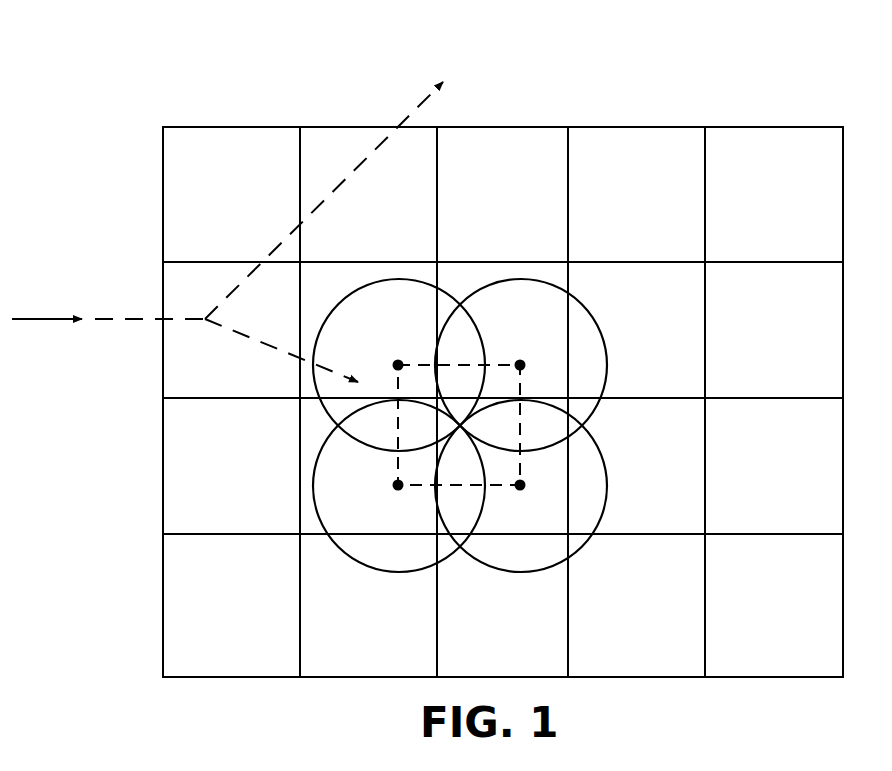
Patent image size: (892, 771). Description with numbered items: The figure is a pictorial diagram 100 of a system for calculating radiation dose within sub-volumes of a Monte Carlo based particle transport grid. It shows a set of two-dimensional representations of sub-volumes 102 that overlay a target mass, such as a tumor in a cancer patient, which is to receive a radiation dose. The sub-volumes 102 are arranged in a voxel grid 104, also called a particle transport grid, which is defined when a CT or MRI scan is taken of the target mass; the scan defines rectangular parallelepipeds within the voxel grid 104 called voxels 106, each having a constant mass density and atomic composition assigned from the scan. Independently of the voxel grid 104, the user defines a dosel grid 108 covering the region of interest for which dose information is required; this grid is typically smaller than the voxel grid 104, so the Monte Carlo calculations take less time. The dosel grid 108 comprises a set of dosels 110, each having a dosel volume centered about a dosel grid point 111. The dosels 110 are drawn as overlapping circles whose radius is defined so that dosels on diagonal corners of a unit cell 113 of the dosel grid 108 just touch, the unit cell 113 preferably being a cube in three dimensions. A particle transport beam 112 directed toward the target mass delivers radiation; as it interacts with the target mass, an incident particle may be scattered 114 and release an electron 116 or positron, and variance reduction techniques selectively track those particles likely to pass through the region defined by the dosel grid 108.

The pictorial diagram 100 is at (135, 177).
The set of sub-volumes 102 is at (840, 87).
The voxel grid 104 is at (760, 127).
The voxel 106 is at (250, 204).
The dosel grid 108 is at (583, 540).
The dosel 110 is at (380, 305).
The dosel grid point 111 is at (393, 488).
The particle transport beam 112 is at (40, 319).
The unit cell 113 is at (462, 363).
The scattered particle 114 is at (412, 110).
The electron 116 is at (245, 340).